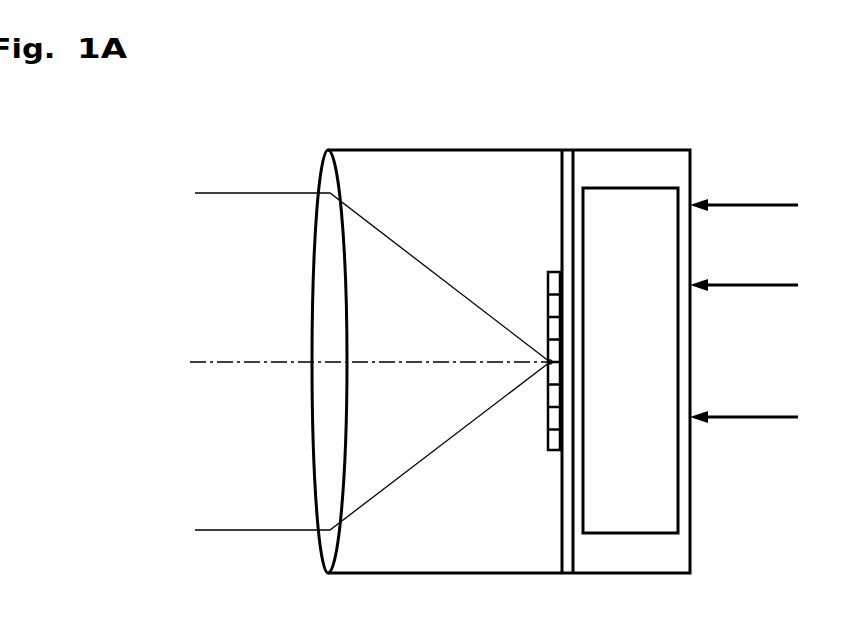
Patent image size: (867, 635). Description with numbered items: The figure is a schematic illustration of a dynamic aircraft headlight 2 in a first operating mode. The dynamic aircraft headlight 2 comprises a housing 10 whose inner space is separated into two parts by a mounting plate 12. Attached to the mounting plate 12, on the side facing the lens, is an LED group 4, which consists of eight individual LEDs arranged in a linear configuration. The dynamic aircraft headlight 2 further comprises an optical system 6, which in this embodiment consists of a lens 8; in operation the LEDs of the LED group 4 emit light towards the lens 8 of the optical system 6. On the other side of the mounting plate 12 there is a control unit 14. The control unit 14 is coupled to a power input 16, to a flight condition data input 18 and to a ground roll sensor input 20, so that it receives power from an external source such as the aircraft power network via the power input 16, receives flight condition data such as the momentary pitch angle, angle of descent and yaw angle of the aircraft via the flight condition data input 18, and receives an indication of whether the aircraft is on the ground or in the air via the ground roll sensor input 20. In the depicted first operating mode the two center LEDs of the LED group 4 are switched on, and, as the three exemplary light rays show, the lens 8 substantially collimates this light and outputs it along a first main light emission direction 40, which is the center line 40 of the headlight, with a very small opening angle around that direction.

The dynamic aircraft headlight 2 is at (290, 125).
The LED group 4 is at (552, 419).
The optical system 6 is at (248, 432).
The lens 8 is at (328, 236).
The housing 10 is at (663, 155).
The mounting plate 12 is at (567, 160).
The control unit 14 is at (616, 200).
The power input 16 is at (770, 417).
The flight condition data input 18 is at (770, 205).
The ground roll sensor input 20 is at (770, 285).
The first main light emission direction 40 is at (236, 358).